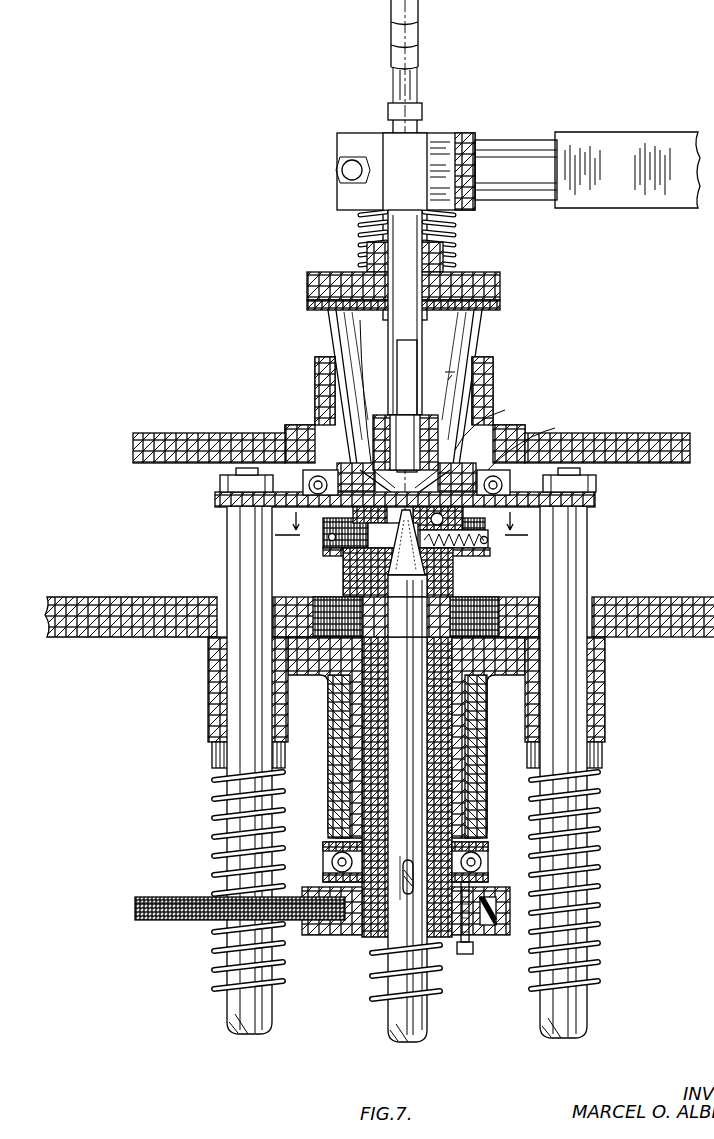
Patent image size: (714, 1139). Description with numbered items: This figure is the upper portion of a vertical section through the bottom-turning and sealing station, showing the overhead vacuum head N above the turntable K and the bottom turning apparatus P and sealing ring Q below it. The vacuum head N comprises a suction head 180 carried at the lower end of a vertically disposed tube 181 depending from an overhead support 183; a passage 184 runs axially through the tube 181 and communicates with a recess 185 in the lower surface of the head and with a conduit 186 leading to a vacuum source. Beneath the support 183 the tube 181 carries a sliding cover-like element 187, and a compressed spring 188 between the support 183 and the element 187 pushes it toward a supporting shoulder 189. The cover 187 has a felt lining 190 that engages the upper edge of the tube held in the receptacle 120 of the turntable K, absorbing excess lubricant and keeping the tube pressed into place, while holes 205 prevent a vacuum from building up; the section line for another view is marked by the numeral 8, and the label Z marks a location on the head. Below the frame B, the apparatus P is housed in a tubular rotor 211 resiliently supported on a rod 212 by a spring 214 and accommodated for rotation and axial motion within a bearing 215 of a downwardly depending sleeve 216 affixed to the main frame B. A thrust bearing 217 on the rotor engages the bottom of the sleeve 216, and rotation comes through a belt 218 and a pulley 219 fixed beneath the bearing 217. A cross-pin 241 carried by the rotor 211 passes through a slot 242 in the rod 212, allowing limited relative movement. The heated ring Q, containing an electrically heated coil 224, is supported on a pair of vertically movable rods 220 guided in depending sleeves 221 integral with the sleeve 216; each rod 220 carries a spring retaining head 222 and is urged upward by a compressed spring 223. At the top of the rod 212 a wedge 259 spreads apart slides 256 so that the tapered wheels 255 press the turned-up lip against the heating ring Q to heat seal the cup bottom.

The conduit 186 is at (418, 14).
The overhead support 183 is at (345, 138).
The compressed spring 188 is at (450, 233).
The cover-like element 187 is at (350, 272).
The holes 205 is at (483, 272).
The felt lining 190 is at (330, 312).
The supporting shoulder 189 is at (425, 345).
The passage 184 is at (388, 353).
The vertically disposed tube 181 is at (418, 355).
The suction head 180 is at (372, 405).
The receptacle 120 is at (493, 388).
The turntable K is at (160, 433).
The recess 185 is at (425, 475).
The vacuum head N is at (489, 425).
The sealing ring Q is at (519, 448).
The point Z is at (445, 371).
The section line 8- 8 is at (401, 525).
The wheels 255 is at (345, 520).
The slide 256 is at (360, 535).
The electrically heated coil 224 is at (497, 512).
The bottom turning apparatus P is at (483, 556).
The bearing 215 is at (355, 710).
The wedge 259 is at (395, 560).
The rod 212 is at (420, 790).
The tubular rotor 211 is at (440, 720).
The downwardly depending sleeve 216 is at (333, 745).
The main frame B is at (665, 597).
The downwardly depending sleeves 221 is at (215, 692).
The spring retaining head 222 is at (215, 750).
The vertically movable rods 220 is at (226, 538).
The compressed springs 223 is at (216, 986).
The thrust bearing 217 is at (483, 858).
The pulley 219 is at (315, 935).
The belt 218 is at (175, 920).
The slot 242 is at (408, 860).
The cross-pin 241 is at (405, 897).
The spring 214 is at (440, 990).